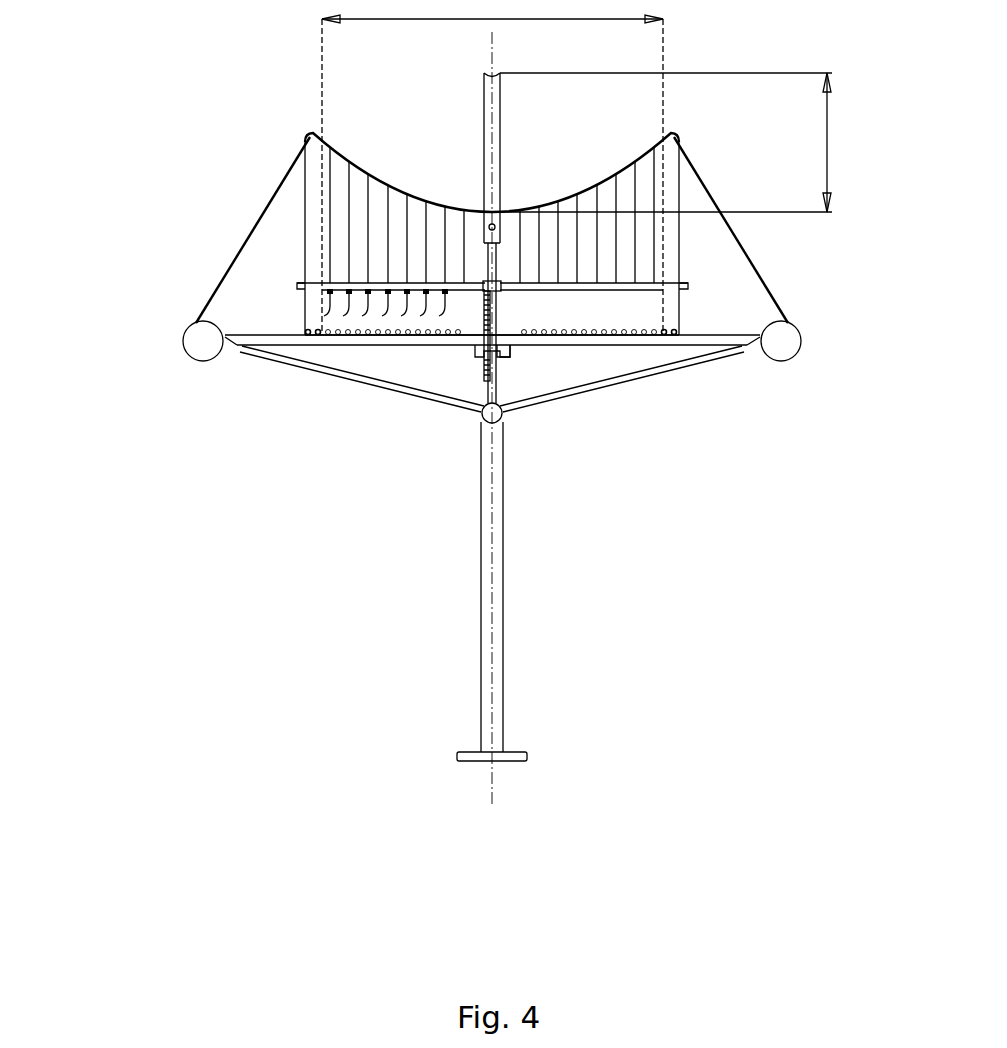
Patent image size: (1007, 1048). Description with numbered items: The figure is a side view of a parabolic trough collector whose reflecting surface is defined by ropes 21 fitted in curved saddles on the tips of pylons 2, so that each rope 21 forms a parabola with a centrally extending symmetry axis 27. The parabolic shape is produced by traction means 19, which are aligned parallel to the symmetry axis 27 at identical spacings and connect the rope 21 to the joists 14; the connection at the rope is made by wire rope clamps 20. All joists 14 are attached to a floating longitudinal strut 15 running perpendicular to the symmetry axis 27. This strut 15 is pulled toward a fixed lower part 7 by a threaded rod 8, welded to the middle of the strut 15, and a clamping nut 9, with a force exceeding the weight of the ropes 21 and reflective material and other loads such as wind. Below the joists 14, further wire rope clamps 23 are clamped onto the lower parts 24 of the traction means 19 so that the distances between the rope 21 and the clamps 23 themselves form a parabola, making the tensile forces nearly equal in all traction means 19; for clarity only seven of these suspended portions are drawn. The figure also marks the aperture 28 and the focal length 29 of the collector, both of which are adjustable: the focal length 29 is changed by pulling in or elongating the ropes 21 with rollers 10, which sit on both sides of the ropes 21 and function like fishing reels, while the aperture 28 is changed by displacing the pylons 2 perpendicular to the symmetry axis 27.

The pylon 2 is at (675, 243).
The fixed lower part 7 is at (280, 340).
The threaded rod 8 is at (476, 362).
The clamping nut 9 is at (503, 350).
The roller 10 is at (781, 343).
The joist 14 is at (297, 285).
The longitudinal strut 15 is at (483, 285).
The traction means 19 is at (367, 245).
The wire rope clamp 20 is at (332, 147).
The rope 21 is at (347, 175).
The wire rope clamp 23 is at (328, 292).
The lower part of the traction means 24 is at (325, 310).
The symmetry axis 27 is at (492, 469).
The aperture 28 is at (405, 20).
The focal length 29 is at (827, 148).